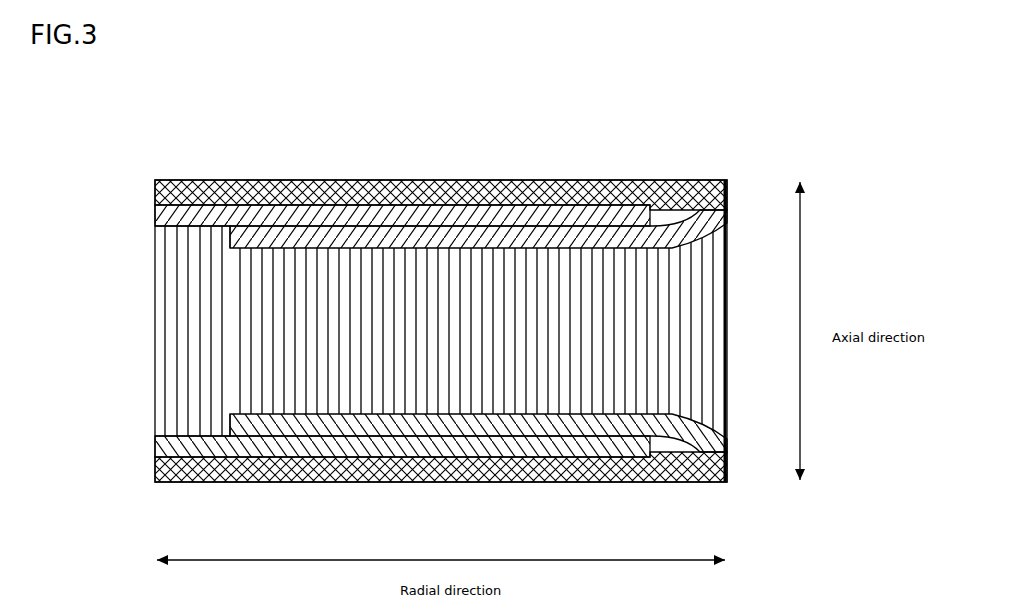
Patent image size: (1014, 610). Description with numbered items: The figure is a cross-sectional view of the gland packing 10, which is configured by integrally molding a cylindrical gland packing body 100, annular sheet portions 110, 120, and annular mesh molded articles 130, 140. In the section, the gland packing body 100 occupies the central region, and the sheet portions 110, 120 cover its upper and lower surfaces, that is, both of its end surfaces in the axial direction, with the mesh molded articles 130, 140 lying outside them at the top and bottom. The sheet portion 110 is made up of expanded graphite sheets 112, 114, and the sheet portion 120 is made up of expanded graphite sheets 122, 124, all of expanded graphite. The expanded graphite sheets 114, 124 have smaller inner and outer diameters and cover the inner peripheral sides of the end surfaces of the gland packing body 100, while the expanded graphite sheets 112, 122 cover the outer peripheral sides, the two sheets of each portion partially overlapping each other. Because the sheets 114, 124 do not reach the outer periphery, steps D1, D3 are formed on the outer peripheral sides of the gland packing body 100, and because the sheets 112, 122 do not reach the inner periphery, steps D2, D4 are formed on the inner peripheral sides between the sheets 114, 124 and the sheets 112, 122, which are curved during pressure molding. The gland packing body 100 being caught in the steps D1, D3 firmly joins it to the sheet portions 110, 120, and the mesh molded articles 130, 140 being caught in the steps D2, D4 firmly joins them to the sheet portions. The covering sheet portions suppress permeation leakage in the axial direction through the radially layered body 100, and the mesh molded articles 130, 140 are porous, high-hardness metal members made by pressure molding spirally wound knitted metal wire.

The gland packing 10 is at (632, 141).
The gland packing body 100 is at (727, 335).
The sheet portion 110 is at (368, 237).
The expanded graphite sheet 112 is at (155, 213).
The expanded graphite sheet 114 is at (230, 237).
The sheet portion 120 is at (369, 423).
The expanded graphite sheet 122 is at (155, 448).
The expanded graphite sheet 124 is at (230, 427).
The mesh molded article 130 is at (348, 180).
The mesh molded article 140 is at (697, 484).
The step D1 is at (178, 253).
The step D2 is at (664, 223).
The step D3 is at (180, 412).
The step D4 is at (667, 447).